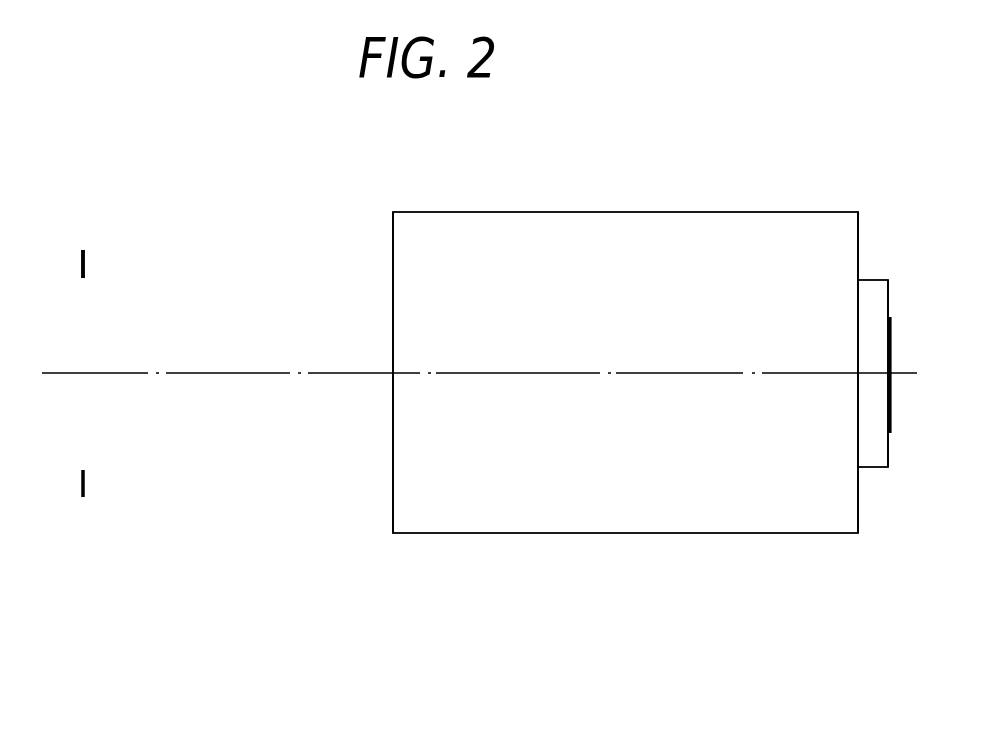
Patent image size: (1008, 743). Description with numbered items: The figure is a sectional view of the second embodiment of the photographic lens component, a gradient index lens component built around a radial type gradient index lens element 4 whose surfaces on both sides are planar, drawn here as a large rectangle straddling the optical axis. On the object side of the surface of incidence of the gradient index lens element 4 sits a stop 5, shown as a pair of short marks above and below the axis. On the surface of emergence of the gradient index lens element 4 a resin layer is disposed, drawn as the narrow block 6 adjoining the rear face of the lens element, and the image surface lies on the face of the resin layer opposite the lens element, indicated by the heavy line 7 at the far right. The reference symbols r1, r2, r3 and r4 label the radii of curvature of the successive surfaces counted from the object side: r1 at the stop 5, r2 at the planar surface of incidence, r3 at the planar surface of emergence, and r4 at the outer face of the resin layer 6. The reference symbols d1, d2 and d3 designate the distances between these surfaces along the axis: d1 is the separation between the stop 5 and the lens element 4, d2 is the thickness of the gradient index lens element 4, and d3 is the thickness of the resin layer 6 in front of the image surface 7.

The gradient index lens element 4 is at (608, 533).
The stop 5 is at (86, 482).
The second lens element 6 is at (872, 470).
The image plane / cover layer 7 is at (893, 430).
The radius of curvature r1 is at (86, 262).
The radius of curvature r2 is at (392, 226).
The radius of curvature r3 is at (856, 228).
The radius of curvature r4 is at (887, 290).
The distance between surfaces d1 is at (213, 373).
The distance between surfaces d2 is at (570, 374).
The distance between surfaces d3 is at (868, 374).